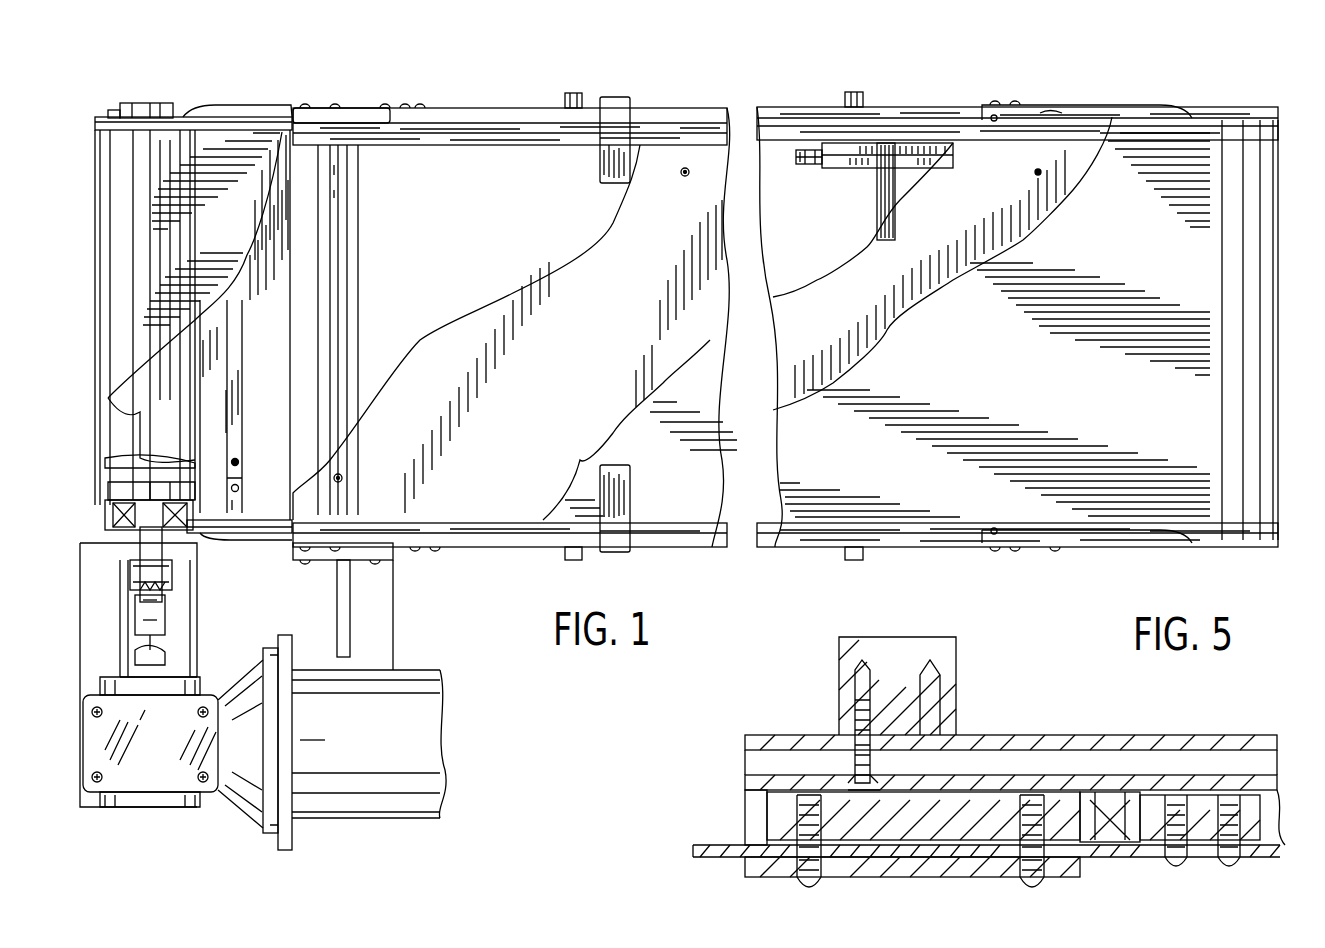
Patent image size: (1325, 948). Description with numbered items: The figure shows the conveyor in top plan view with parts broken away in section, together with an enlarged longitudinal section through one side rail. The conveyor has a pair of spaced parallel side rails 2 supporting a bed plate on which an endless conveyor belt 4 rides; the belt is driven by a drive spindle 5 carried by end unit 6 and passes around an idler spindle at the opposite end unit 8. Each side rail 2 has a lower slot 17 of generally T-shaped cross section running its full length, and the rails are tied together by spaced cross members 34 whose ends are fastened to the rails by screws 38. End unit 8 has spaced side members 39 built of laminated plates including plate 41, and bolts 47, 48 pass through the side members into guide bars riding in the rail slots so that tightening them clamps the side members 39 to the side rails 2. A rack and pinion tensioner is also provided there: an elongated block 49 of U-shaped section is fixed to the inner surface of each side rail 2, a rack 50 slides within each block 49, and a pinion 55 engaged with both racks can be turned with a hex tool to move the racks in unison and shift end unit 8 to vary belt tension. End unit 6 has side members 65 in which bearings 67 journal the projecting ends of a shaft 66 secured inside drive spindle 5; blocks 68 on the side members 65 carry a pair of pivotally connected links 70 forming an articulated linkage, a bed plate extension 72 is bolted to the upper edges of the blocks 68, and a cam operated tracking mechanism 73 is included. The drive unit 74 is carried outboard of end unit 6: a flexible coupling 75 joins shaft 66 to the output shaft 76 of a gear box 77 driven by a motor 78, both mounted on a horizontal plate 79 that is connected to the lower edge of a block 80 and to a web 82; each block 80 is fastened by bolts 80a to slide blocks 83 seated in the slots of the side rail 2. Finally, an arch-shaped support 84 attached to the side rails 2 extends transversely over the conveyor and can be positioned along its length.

In FIG. 1, the side rail 2 is at (680, 108).
In FIG. 5, the side rail 2 is at (1250, 735).
In FIG. 1, the endless conveyor belt 4 is at (122, 298).
In FIG. 1, the drive spindle 5 is at (132, 418).
In FIG. 1, the end unit 6 is at (336, 105).
In FIG. 1, the end unit 8 is at (1193, 108).
In FIG. 5, the lower slot 17 is at (745, 794).
In FIG. 1, the cross member 34 is at (348, 250).
In FIG. 5, the cross member 34 is at (952, 652).
In FIG. 5, the screw 38 is at (855, 698).
In FIG. 1, the side member 39 is at (1110, 105).
In FIG. 1, the laminated plate 41 is at (1145, 108).
In FIG. 1, the bolt 47 is at (1055, 118).
In FIG. 1, the bolt 48 is at (1060, 105).
In FIG. 1, the elongated block 49 is at (933, 168).
In FIG. 1, the rack 50 is at (806, 165).
In FIG. 1, the pinion 55 is at (877, 208).
In FIG. 1, the side member 65 is at (268, 110).
In FIG. 5, the side member 65 is at (706, 845).
In FIG. 1, the shaft 66 is at (150, 103).
In FIG. 1, the bearing 67 is at (112, 110).
In FIG. 1, the block 68 is at (240, 500).
In FIG. 1, the link 70 is at (240, 420).
In FIG. 1, the bed plate extension 72 is at (243, 343).
In FIG. 1, the cam operated tracking mechanism 73 is at (437, 105).
In FIG. 5, the cam operated tracking mechanism 73 is at (1136, 857).
In FIG. 1, the drive unit 74 is at (210, 808).
In FIG. 1, the flexible coupling 75 is at (135, 598).
In FIG. 1, the output shaft 76 is at (150, 646).
In FIG. 1, the gear box 77 is at (98, 731).
In FIG. 1, the motor 78 is at (376, 739).
In FIG. 1, the horizontal plate 79 is at (394, 633).
In FIG. 1, the block 80 is at (393, 550).
In FIG. 5, the block 80 is at (745, 870).
In FIG. 5, the bolt 80a is at (1010, 886).
In FIG. 1, the web 82 is at (337, 613).
In FIG. 5, the slide block 83 is at (965, 812).
In FIG. 1, the support 84 is at (600, 160).